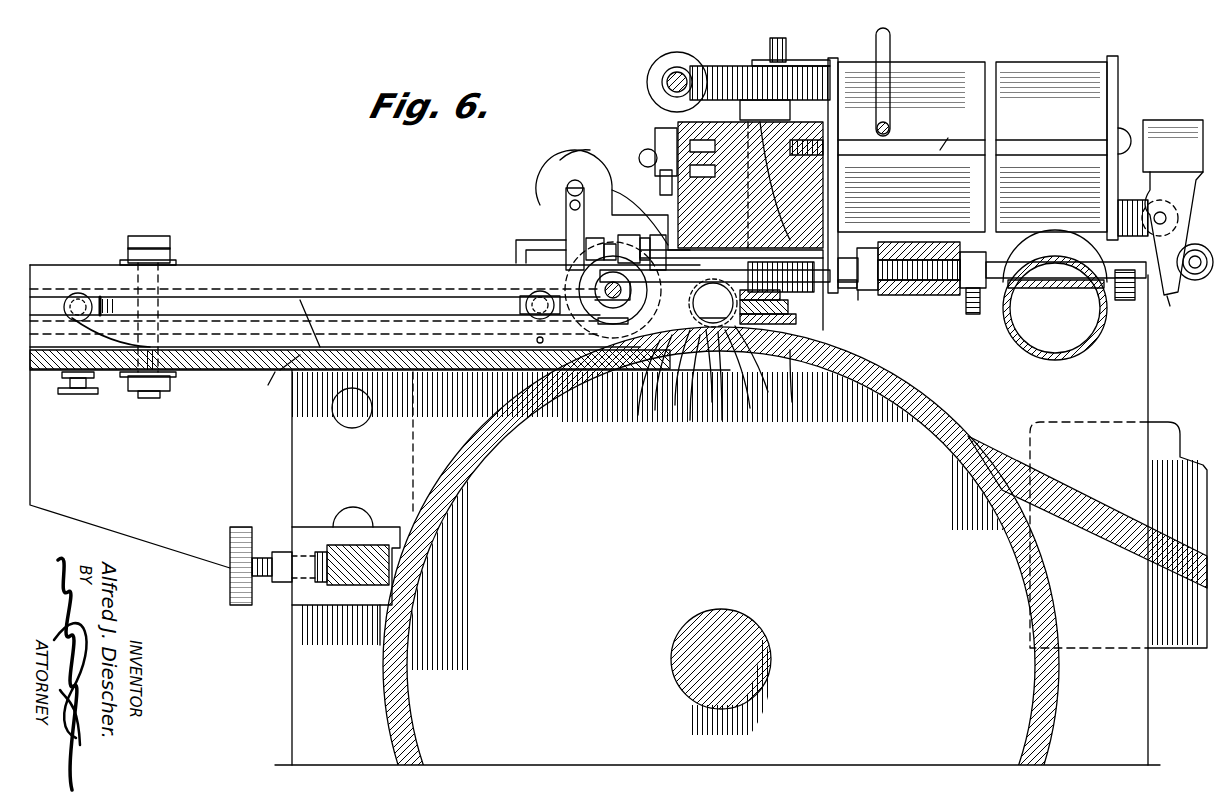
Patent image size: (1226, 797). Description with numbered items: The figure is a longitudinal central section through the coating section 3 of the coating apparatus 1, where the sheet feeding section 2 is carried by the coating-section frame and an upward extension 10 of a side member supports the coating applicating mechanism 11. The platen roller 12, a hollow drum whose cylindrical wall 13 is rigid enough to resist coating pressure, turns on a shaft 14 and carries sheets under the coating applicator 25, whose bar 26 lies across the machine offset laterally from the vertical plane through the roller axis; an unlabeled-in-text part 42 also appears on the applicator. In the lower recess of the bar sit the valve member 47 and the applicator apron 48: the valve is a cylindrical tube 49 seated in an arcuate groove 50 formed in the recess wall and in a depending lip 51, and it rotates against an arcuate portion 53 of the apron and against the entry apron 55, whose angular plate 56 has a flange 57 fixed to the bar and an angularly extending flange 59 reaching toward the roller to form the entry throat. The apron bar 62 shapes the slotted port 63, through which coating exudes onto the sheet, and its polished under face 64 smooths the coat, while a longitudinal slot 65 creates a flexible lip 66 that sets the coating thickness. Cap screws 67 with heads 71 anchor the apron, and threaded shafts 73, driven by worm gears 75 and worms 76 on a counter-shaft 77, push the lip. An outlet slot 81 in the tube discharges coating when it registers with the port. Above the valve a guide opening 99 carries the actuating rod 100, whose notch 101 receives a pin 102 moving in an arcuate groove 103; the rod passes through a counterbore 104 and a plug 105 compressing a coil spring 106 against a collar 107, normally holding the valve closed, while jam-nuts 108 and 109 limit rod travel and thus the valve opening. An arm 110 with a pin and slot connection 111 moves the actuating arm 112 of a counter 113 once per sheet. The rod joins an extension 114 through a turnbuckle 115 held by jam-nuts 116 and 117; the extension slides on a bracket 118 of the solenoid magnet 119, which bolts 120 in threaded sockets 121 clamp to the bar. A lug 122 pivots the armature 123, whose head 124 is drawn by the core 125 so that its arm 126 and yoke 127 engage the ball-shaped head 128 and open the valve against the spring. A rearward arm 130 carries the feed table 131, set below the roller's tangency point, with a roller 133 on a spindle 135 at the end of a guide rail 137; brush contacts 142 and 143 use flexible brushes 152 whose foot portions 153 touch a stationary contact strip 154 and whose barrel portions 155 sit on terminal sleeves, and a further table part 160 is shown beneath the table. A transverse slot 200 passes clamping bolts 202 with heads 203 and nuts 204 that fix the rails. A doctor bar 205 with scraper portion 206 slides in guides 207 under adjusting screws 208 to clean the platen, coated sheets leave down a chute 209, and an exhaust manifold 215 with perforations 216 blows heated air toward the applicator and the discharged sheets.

The coating apparatus 1 is at (895, 60).
The sheet feeding section 2 is at (452, 268).
The coating section 3 is at (620, 180).
The extension 10 is at (1140, 382).
The coating applicating mechanism 11 is at (835, 352).
The platen roller 12 is at (1052, 700).
The cylindrical wall 13 is at (390, 715).
The shaft 14 is at (764, 652).
The coating applicator 25 is at (660, 140).
The bar 26 is at (690, 128).
The rod 42 is at (888, 30).
The valve member 47 is at (714, 374).
The applicator apron 48 is at (826, 324).
The cylindrical tube 49 is at (715, 384).
The arcuate groove 50 is at (679, 375).
The depending lip 51 is at (660, 379).
The arcuate portion 53 is at (757, 368).
The entry apron 55 is at (643, 386).
The angular plate 56 is at (613, 290).
The flange 57 is at (628, 322).
The angularly extending flange 59 is at (690, 385).
The bar 62 is at (785, 296).
The slotted port 63 is at (743, 379).
The under face 64 is at (800, 385).
The longitudinal slot 65 is at (790, 308).
The flexible lip 66 is at (798, 320).
The cap screws 67 is at (756, 111).
The heads 71 is at (755, 66).
The threaded shafts 73 is at (786, 44).
The worm gears 75 is at (703, 52).
The worms 76 is at (660, 70).
The counter-shaft 77 is at (666, 82).
The outlet slot 81 is at (713, 309).
The guide opening 99 is at (700, 260).
The actuating rod 100 is at (848, 292).
The notch 101 is at (715, 266).
The pin 102 is at (763, 272).
The arcuate groove 103 is at (713, 303).
The counterbore 104 is at (869, 269).
The plug 105 is at (860, 250).
The coil spring 106 is at (870, 310).
The collar 107 is at (830, 190).
The jam-nut 108 is at (612, 240).
The jam-nut 109 is at (640, 238).
The arm 110 is at (556, 232).
The pin and slot connection 111 is at (566, 200).
The actuating arm 112 is at (568, 184).
The counter 113 is at (575, 152).
The extension 114 is at (1010, 260).
The turnbuckle 115 is at (968, 292).
The jam-nut 116 is at (905, 296).
The jam-nut 117 is at (972, 314).
The bracket 118 is at (1122, 305).
The solenoid magnet 119 is at (1088, 52).
The bolts 120 is at (933, 132).
The threaded sockets 121 is at (825, 140).
The lug 122 is at (1148, 192).
The armature 123 is at (1184, 190).
The head 124 is at (1198, 118).
The core 125 is at (1128, 118).
The arm 126 is at (1178, 222).
The yoke 127 is at (1184, 308).
The ball-shaped head 128 is at (1182, 282).
The arm 130 is at (95, 512).
The feed table 131 is at (222, 372).
The roller 133 is at (560, 340).
The spindle 135 is at (580, 296).
The guide rail 137 is at (248, 250).
The brush contact 142 is at (100, 280).
The brush contact 143 is at (520, 300).
The flexible brushes 152 is at (125, 280).
The foot portions 153 is at (150, 347).
The stationary contact strip 154 is at (312, 280).
The barrel portions 155 is at (68, 280).
The plate 160 is at (269, 387).
The transverse slot 200 is at (158, 410).
The clamping bolts 202 is at (172, 252).
The heads 203 is at (142, 236).
The nuts 204 is at (172, 388).
The doctor bar 205 is at (380, 645).
The scraper portion 206 is at (392, 600).
The guides 207 is at (328, 512).
The adjusting screws 208 is at (240, 605).
The chute 209 is at (1058, 478).
The exhaust manifold 215 is at (1038, 358).
The perforations 216 is at (1080, 354).